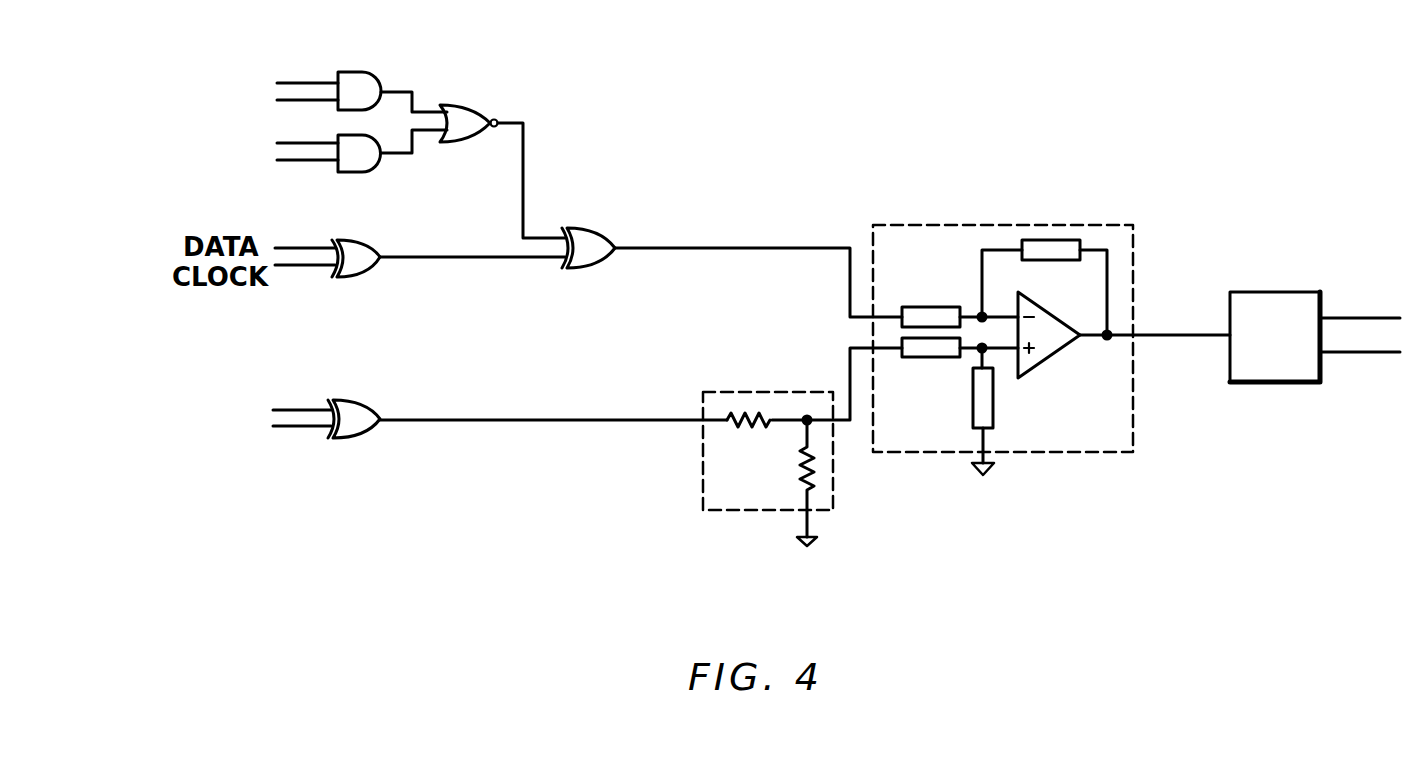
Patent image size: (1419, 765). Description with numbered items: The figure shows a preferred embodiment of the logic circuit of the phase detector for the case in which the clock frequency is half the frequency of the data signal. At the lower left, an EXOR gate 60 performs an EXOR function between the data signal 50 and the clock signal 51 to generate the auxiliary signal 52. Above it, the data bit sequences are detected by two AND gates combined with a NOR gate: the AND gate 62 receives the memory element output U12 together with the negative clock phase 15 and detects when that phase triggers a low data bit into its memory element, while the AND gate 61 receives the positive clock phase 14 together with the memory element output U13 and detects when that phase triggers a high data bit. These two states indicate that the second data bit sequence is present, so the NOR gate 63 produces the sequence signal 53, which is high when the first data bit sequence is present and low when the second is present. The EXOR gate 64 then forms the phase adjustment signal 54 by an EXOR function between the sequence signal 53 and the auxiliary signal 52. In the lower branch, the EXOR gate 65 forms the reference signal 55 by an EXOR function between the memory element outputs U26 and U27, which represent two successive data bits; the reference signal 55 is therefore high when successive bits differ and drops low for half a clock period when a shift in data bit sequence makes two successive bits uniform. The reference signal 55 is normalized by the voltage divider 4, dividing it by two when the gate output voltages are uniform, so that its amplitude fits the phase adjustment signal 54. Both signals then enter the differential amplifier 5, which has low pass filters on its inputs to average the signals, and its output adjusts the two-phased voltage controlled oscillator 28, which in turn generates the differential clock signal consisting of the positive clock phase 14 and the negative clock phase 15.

The output signal of memory element 12 U12 is at (294, 83).
The output signal of memory element 13 U13 is at (309, 160).
The output signal of memory element 26 U26 is at (290, 410).
The output signal of memory element 27 U27 is at (291, 426).
The positive clock phase 14 is at (284, 100).
The negative clock phase 15 is at (293, 143).
The AND gate 62 is at (349, 72).
The AND gate 61 is at (362, 172).
The NOR gate 63 is at (460, 106).
The sequence signal 53 is at (524, 152).
The data signal 50 is at (298, 248).
The clock signal 51 is at (302, 265).
The EXOR gate 60 is at (380, 262).
The auxiliary signal 52 is at (456, 258).
The EXOR gate 64 is at (588, 232).
The phase adjustment signal 54 is at (762, 248).
The EXOR gate 65 is at (377, 430).
The reference signal 55 is at (567, 420).
The voltage divider 4 is at (700, 470).
The differential amplifier 5 is at (967, 223).
The voltage controlled oscillator 28 is at (1272, 292).